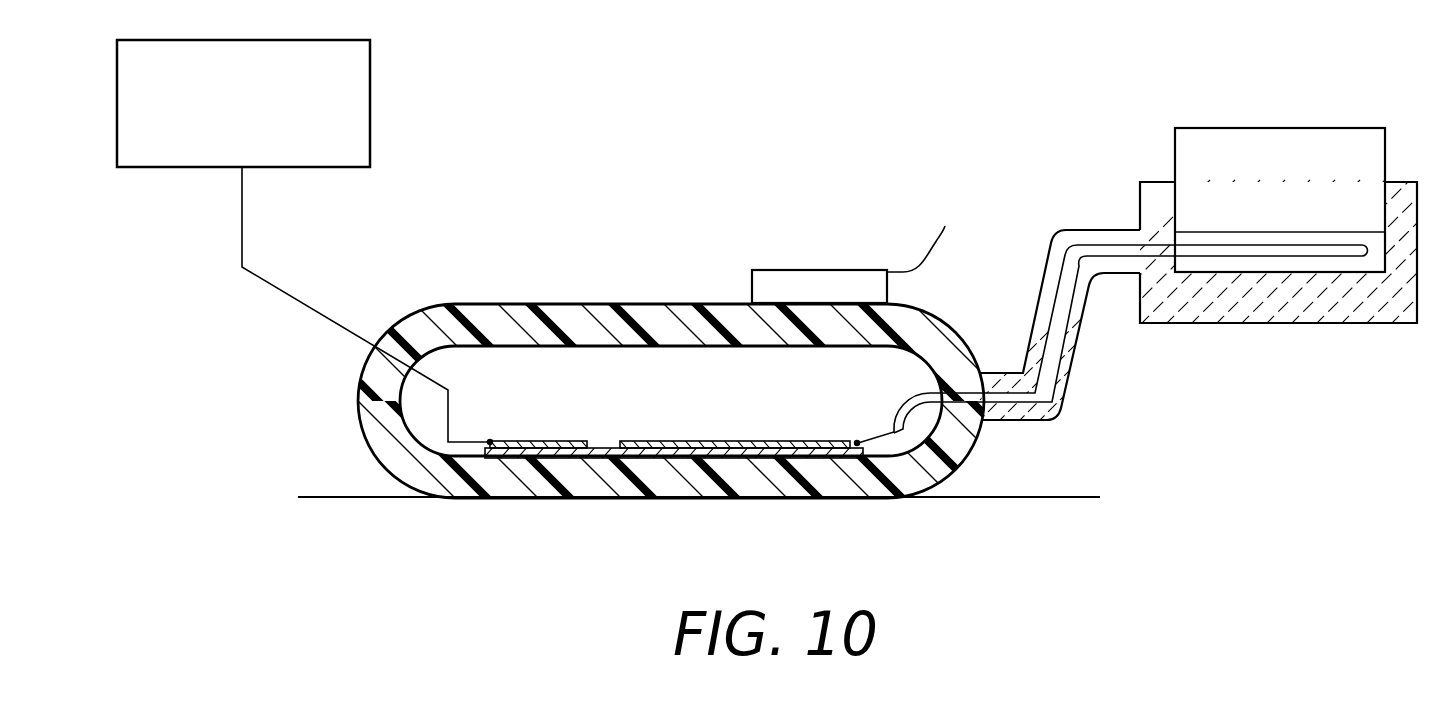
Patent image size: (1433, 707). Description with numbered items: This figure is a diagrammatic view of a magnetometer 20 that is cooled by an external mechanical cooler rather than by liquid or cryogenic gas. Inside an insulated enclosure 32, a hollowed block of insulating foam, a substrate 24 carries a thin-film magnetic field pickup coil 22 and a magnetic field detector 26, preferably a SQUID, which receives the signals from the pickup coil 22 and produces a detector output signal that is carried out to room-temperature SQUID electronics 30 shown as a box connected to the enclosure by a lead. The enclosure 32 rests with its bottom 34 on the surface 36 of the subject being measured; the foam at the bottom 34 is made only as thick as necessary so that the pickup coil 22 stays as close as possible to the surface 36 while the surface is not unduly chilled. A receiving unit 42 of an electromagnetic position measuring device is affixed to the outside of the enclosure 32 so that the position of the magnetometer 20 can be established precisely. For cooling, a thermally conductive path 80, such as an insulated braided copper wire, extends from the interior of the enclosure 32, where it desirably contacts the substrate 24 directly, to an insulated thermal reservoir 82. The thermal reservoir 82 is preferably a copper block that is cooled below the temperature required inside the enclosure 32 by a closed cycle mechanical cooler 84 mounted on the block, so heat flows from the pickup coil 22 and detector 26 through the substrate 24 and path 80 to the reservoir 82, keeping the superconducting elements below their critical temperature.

The magnetometer 20 is at (568, 384).
The magnetic field pickup coil 22 is at (752, 440).
The substrate 24 is at (599, 458).
The magnetic field detector 26 is at (558, 440).
The SQUID electronics 30 is at (371, 67).
The insulated enclosure 32 is at (960, 447).
The bottom of the enclosure 34 is at (742, 485).
The surface 36 is at (335, 497).
The receiving unit 42 is at (793, 270).
The thermally conductive path 80 is at (1047, 373).
The insulated thermal reservoir 82 is at (1287, 260).
The mechanical cooler 84 is at (1194, 128).